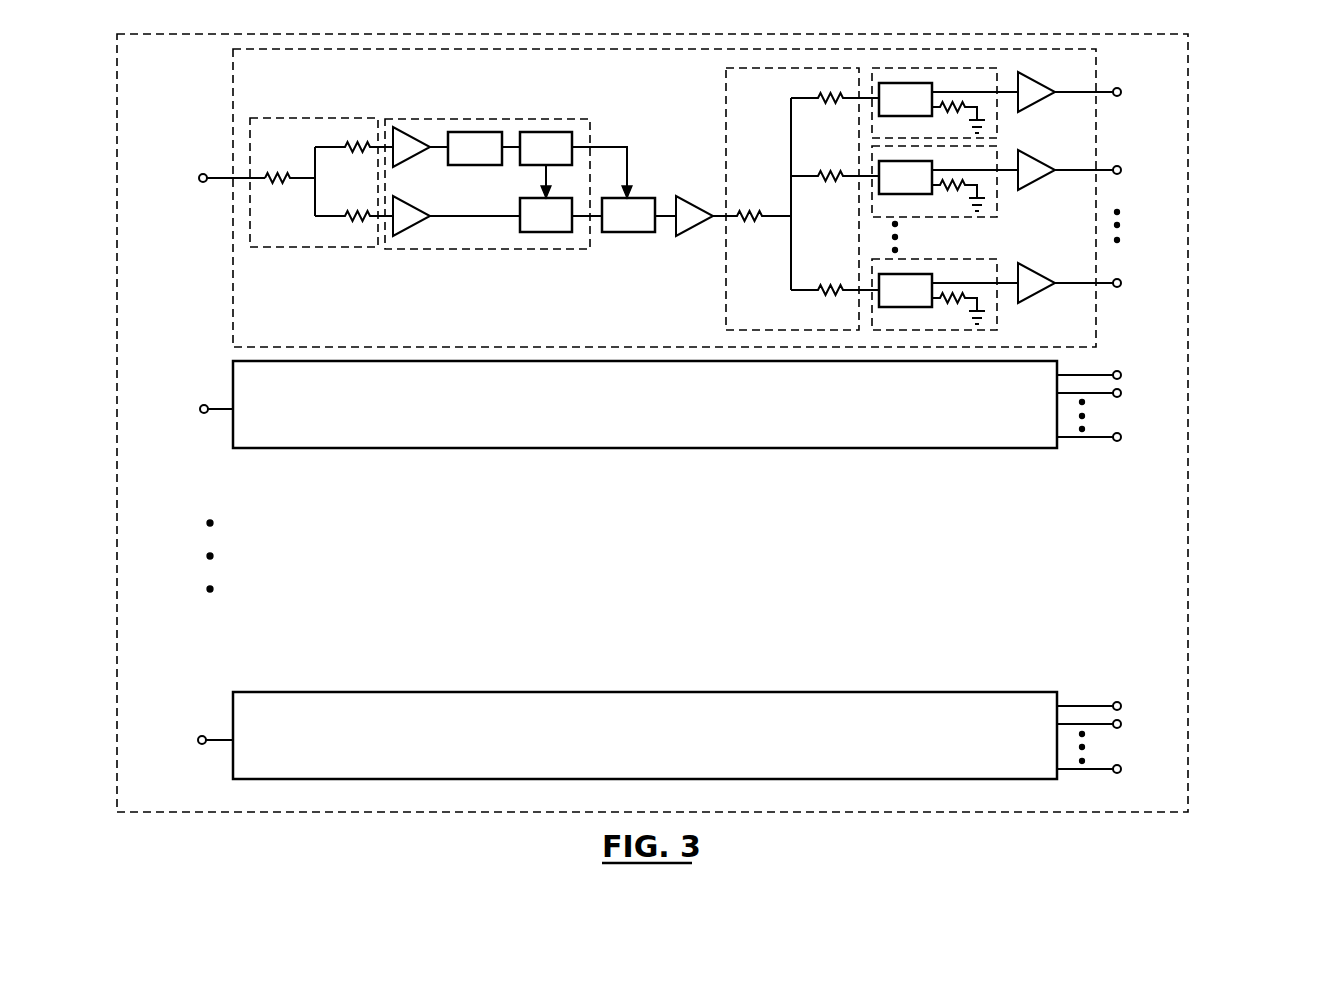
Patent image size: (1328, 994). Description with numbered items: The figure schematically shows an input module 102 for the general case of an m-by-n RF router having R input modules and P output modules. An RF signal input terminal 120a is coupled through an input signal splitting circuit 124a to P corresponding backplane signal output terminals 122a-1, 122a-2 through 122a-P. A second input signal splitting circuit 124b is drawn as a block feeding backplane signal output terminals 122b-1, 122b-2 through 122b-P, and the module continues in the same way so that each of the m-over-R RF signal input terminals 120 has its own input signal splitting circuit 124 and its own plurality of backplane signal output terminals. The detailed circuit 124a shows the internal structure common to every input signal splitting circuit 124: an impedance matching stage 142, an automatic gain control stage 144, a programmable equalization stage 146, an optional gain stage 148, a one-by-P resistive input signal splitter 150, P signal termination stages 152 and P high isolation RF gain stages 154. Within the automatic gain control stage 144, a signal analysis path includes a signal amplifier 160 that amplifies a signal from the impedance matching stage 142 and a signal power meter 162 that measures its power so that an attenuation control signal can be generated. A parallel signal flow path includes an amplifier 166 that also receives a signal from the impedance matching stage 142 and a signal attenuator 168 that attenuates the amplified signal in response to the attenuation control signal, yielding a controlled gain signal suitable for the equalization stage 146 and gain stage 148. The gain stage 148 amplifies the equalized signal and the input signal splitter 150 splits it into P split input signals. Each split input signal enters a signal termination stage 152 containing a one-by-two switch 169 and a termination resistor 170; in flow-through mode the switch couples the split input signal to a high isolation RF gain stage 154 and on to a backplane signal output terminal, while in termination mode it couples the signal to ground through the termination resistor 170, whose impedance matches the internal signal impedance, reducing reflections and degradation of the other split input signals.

The input module 102 is at (107, 682).
The RF signal input terminal 120a is at (199, 176).
The RF signal input terminal 120 is at (200, 738).
The input signal splitting circuit 124a is at (233, 242).
The input signal splitting circuit 124b is at (605, 414).
The input signal splitting circuit 124 is at (648, 746).
The impedance matching stage 142 is at (313, 118).
The automatic gain control stage 144 is at (470, 119).
The programmable equalization stage 146 is at (610, 226).
The gain stage 148 is at (695, 232).
The resistive input signal splitter 150 is at (726, 80).
The signal termination stage 152 is at (1000, 118).
The high isolation RF gain stage 154 is at (1040, 80).
The signal amplifier 160 is at (417, 142).
The signal power meter 162 is at (457, 159).
The amplifier 166 is at (420, 223).
The signal attenuator 168 is at (528, 226).
The 1×2 switch 169 is at (528, 159).
The termination resistor 170 is at (948, 103).
The backplane signal output terminal 122a-1 is at (1121, 92).
The backplane signal output terminal 122a-2 is at (1121, 170).
The backplane signal output terminal 122a-P is at (1121, 283).
The backplane signal output terminal 122b-1 is at (1121, 375).
The backplane signal output terminal 122b-2 is at (1121, 393).
The backplane signal output terminal 122b-P is at (1121, 437).